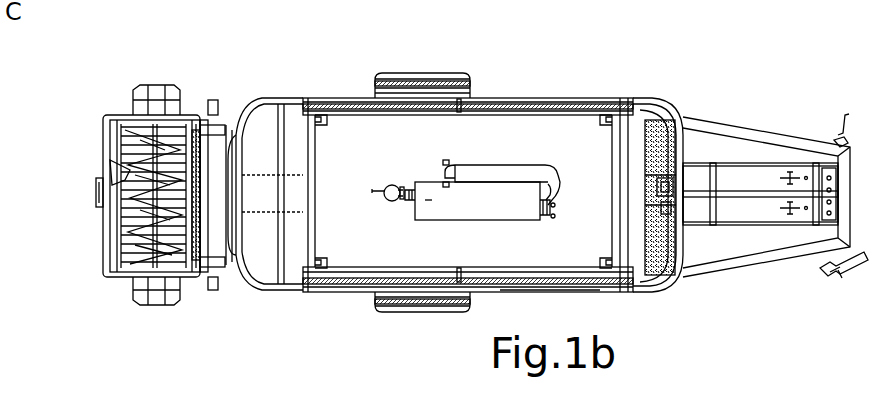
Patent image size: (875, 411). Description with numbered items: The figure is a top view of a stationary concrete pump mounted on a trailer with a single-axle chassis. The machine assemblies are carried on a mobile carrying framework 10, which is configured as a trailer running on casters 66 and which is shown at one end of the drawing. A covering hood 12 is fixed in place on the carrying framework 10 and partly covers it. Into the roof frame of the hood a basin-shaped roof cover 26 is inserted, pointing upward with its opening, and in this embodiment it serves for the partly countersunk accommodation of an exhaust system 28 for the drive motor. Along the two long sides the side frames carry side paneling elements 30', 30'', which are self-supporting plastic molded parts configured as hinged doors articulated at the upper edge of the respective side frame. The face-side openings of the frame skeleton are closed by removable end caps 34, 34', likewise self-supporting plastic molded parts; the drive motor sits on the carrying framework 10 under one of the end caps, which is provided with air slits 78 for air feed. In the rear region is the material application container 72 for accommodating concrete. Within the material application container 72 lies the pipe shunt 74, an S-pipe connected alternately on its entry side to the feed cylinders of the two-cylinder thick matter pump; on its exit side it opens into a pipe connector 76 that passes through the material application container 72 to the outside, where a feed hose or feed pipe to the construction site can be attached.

The carrying framework 10 is at (707, 128).
The covering hood 12 is at (520, 152).
The roof cover 26 is at (343, 143).
The exhaust system 28 is at (470, 205).
The side paneling element 30' is at (384, 324).
The side paneling element 30'' is at (592, 310).
The end cap 34 is at (679, 157).
The end cap 34' is at (264, 165).
The casters 66 is at (418, 90).
The material application container 72 is at (140, 140).
The pipe shunt 74 is at (122, 175).
The pipe connector 76 is at (96, 192).
The air slits 78 is at (672, 165).